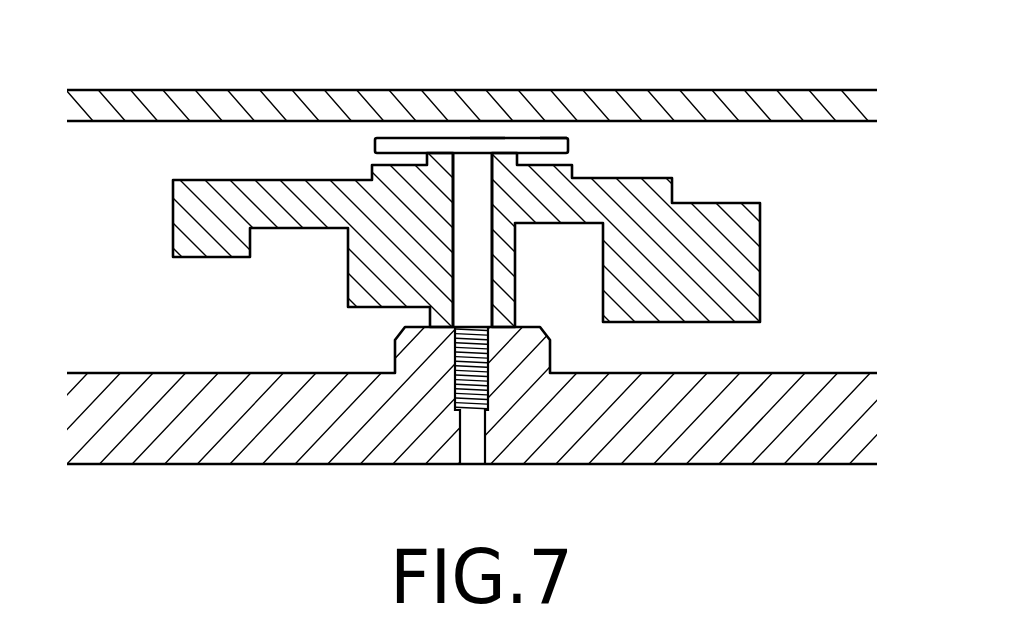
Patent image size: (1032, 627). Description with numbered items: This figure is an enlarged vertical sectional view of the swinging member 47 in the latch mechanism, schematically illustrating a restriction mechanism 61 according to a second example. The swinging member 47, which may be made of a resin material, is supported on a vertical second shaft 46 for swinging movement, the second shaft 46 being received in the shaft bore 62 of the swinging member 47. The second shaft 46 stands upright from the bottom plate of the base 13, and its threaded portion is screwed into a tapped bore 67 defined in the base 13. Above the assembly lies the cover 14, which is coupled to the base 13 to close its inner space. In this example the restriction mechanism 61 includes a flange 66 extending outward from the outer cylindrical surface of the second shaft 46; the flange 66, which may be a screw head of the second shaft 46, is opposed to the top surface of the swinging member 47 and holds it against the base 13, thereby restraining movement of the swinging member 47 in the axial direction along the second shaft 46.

The base 13 is at (818, 373).
The cover 14 is at (818, 90).
The second shaft 46 is at (487, 138).
The swinging member 47 is at (760, 226).
The restriction mechanism 61 is at (565, 138).
The shaft bore 62 is at (453, 287).
The flange 66 is at (374, 147).
The tapped bore 67 is at (479, 456).